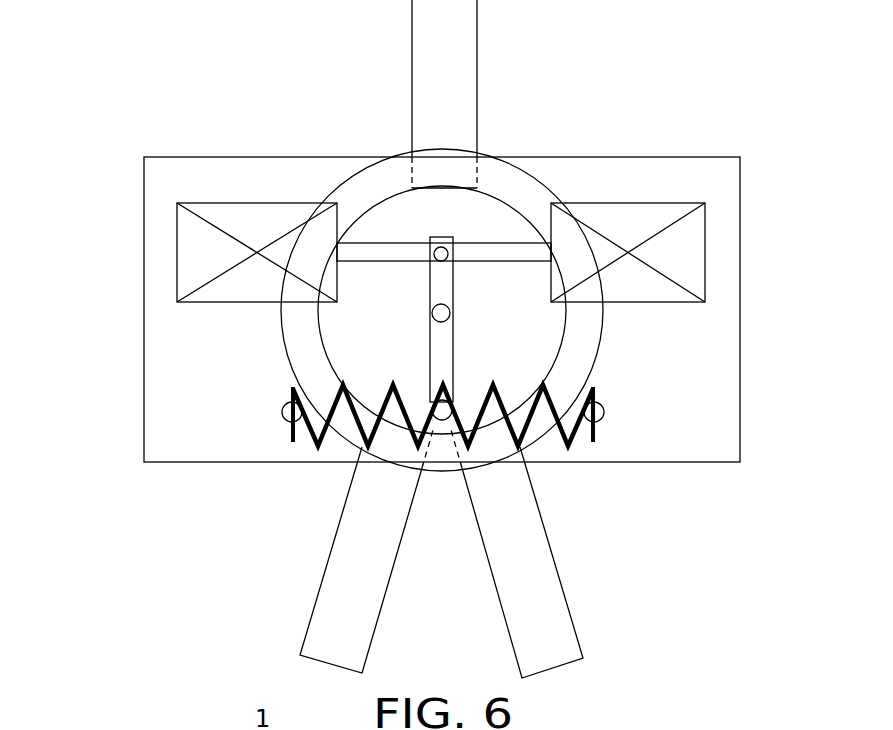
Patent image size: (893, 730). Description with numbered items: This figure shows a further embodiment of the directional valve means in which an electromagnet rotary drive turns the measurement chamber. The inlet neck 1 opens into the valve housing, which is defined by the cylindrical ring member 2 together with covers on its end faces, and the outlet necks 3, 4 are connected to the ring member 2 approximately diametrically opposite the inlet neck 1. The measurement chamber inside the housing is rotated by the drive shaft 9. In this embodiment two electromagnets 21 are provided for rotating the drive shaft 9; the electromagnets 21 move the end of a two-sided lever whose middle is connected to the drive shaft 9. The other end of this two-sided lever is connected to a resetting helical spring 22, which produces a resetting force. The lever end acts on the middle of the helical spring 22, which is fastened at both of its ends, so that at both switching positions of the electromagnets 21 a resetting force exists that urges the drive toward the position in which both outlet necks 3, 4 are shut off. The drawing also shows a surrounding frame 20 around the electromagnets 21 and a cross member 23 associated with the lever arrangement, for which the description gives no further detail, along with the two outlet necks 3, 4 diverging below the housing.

The inlet neck 1 is at (462, 65).
The cylindrical ring member 2 is at (237, 355).
The outlet neck 3 is at (557, 627).
The outlet neck 4 is at (338, 635).
The drive shaft 9 is at (450, 314).
The housing plate 20 is at (695, 175).
The electromagnet 21 is at (215, 222).
The resetting helical spring 22 is at (313, 440).
The cross bar 23 is at (428, 278).